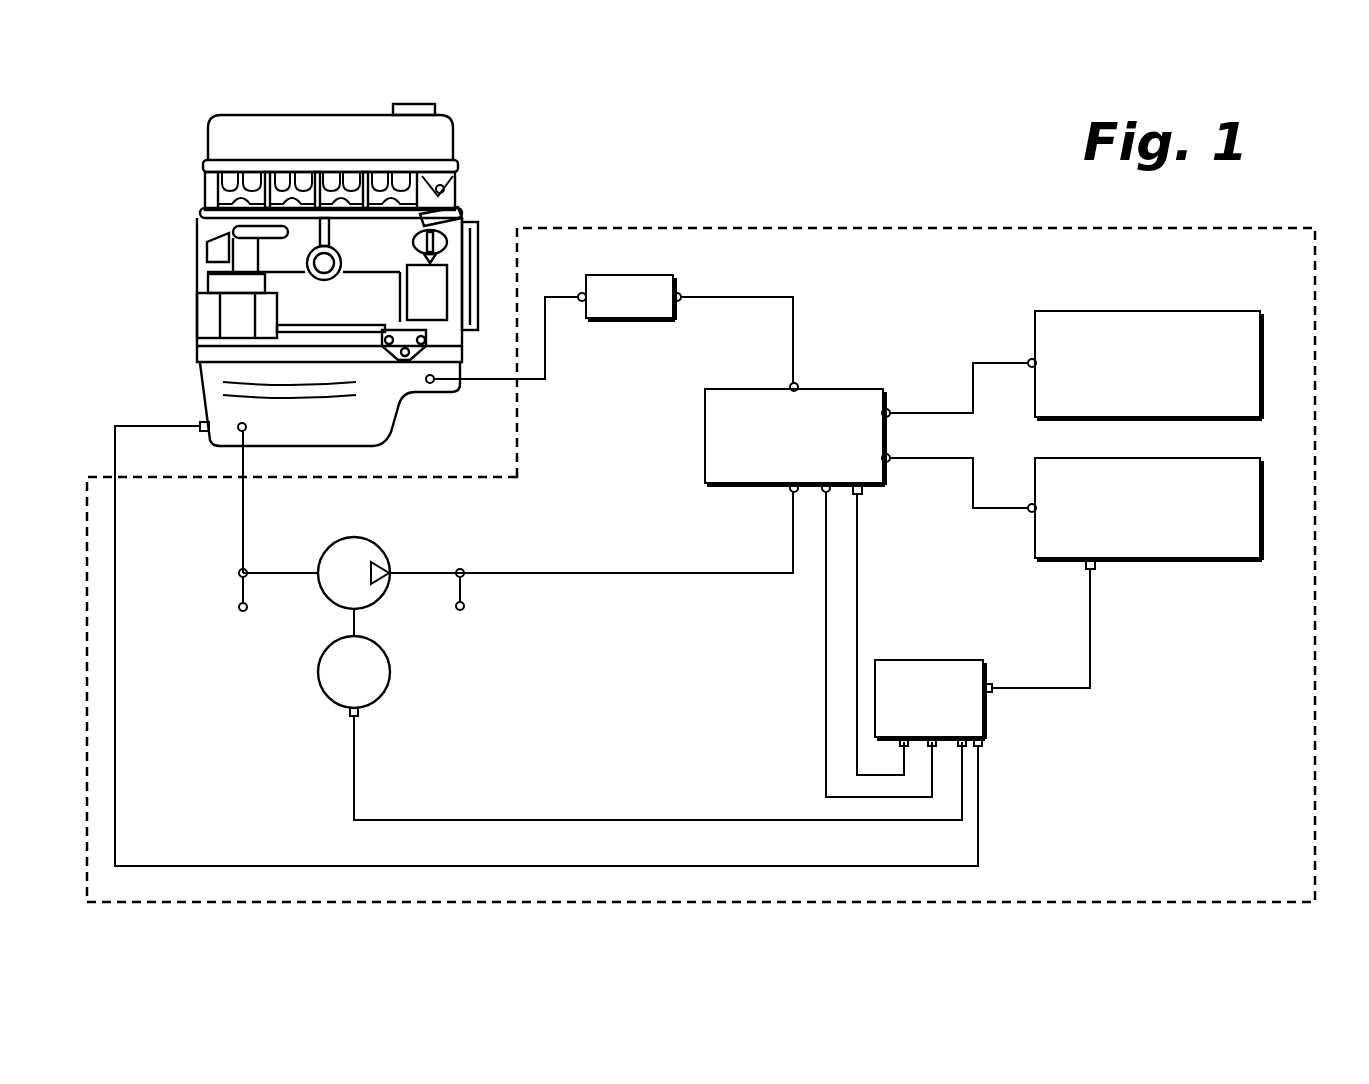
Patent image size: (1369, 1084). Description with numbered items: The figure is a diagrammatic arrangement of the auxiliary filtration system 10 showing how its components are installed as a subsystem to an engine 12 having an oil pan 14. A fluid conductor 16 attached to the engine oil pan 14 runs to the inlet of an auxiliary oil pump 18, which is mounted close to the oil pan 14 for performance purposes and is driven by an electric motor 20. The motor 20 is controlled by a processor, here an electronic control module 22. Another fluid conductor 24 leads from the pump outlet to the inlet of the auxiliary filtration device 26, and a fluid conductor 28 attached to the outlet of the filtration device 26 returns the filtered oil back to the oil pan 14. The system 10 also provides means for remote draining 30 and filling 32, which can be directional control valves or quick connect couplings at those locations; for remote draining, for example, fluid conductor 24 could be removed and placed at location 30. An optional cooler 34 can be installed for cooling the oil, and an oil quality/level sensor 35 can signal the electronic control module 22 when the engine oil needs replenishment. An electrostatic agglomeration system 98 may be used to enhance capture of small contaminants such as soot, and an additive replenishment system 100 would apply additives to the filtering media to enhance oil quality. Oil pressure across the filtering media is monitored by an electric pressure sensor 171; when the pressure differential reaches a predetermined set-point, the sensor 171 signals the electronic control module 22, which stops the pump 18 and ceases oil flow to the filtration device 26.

The auxiliary filtration system 10 is at (838, 218).
The engine 12 is at (446, 143).
The oil pan 14 is at (215, 414).
The fluid conductor 16 is at (243, 528).
The auxiliary oil pump 18 is at (374, 546).
The electric motor 20 is at (378, 700).
The electronic control module 22 is at (935, 660).
The fluid conductor 24 is at (636, 576).
The auxiliary filtration device 26 is at (835, 389).
The fluid conductor 28 is at (793, 314).
The means for remote draining 30 is at (465, 606).
The means for remote filling 32 is at (239, 609).
The optional cooler 34 is at (628, 275).
The oil quality/level sensor 35 is at (200, 432).
The electrostatic agglomeration system 98 is at (1150, 311).
The additive replenishment system 100 is at (1152, 562).
The electric pressure sensor 171 is at (862, 491).